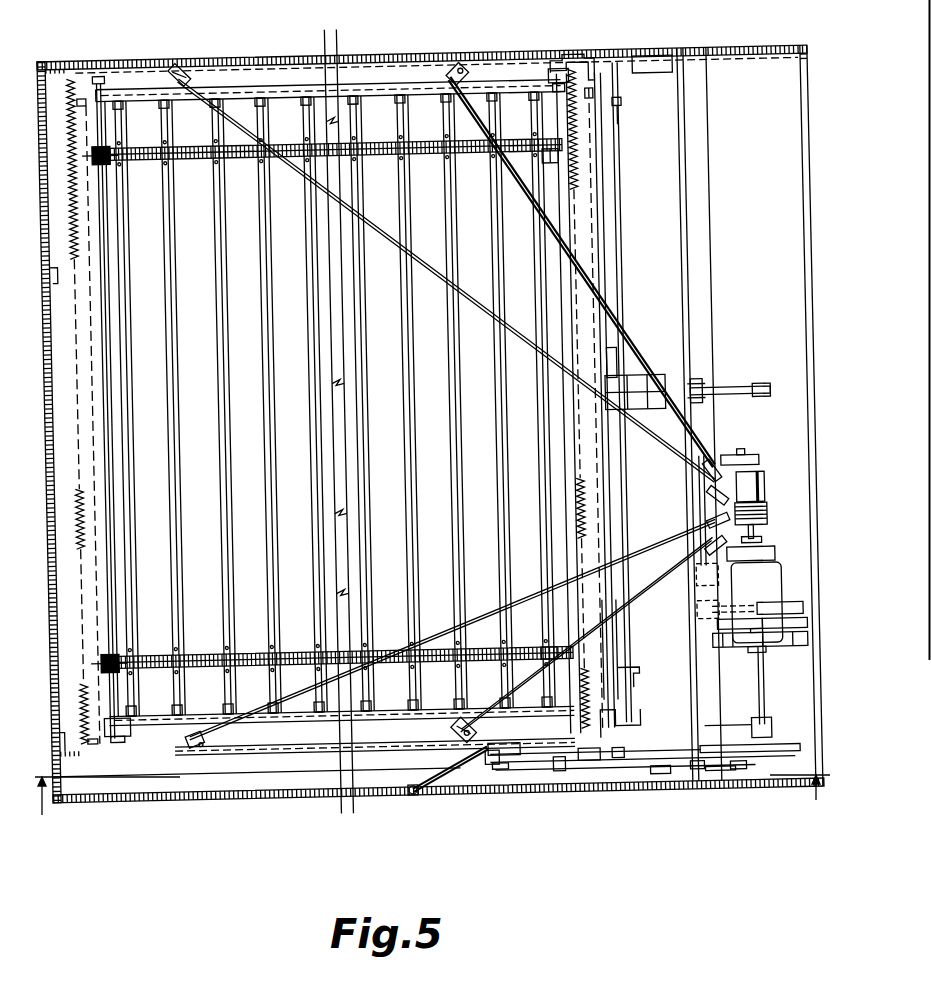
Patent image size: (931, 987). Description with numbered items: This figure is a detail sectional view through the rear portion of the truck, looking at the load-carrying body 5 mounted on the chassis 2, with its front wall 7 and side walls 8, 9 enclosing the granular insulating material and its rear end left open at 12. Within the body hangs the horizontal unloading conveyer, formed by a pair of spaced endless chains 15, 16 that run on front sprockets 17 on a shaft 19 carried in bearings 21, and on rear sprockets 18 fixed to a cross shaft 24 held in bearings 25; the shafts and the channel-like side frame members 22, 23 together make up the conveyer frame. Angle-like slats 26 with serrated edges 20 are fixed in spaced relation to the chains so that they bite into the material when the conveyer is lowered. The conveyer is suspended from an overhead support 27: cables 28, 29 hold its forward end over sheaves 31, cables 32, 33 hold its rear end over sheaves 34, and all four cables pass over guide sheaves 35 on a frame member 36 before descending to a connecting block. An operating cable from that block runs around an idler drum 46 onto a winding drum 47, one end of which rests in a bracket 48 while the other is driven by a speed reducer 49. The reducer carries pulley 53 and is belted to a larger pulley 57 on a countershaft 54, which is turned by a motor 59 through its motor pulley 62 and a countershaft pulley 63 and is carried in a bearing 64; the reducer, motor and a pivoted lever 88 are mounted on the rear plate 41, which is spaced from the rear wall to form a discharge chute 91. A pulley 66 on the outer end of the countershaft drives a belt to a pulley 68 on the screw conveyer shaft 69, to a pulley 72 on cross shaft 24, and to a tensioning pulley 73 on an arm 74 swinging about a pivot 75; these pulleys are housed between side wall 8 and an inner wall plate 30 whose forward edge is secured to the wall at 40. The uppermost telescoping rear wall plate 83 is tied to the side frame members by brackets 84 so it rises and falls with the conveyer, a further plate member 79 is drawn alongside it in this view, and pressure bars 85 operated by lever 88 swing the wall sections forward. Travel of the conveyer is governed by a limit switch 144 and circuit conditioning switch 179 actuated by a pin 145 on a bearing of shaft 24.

The chassis 2 is at (431, 812).
The load-carrying body 5 is at (211, 808).
The front wall 7 is at (46, 268).
The side wall 8 is at (258, 802).
The side wall 9 is at (224, 60).
The open rear end 12 is at (804, 118).
The endless chain 15 is at (245, 656).
The endless chain 16 is at (242, 152).
The sprockets 17 is at (110, 162).
The sprockets 18 is at (546, 153).
The shaft 19 is at (108, 380).
The serrated edges 20 is at (75, 546).
The bearings 21 is at (112, 83).
The side frame member 22 is at (153, 722).
The side frame member 23 is at (245, 90).
The cross shaft 24 is at (530, 378).
The bearings 25 is at (527, 77).
The slats 26 is at (172, 298).
The overhead support 27 is at (290, 72).
The cable 28 is at (437, 628).
The cable 29 is at (430, 275).
The inner wall plate 30 is at (478, 772).
The sheaves 31 is at (176, 72).
The cable 32 is at (640, 592).
The cable 33 is at (637, 326).
The sheaves 34 is at (446, 72).
The guide sheaves 35 is at (705, 487).
The frame member 36 is at (700, 320).
The forward edge attachment 40 is at (410, 800).
The plate 41 is at (684, 247).
The idler drum 46 is at (700, 506).
The winding drum 47 is at (757, 483).
The bracket 48 is at (757, 458).
The speed reducer 49 is at (768, 540).
The pulley 53 is at (785, 619).
The countershaft 54 is at (760, 681).
The pulley 57 is at (785, 606).
The motor 59 is at (767, 580).
The motor pulley 62 is at (745, 629).
The pulley 63 is at (780, 626).
The bearing 64 is at (765, 721).
The pulley 66 is at (780, 746).
The pulley 68 is at (690, 762).
The shaft 69 is at (660, 770).
The pulley 72 is at (585, 764).
The pulley 73 is at (730, 770).
The arm 74 is at (710, 757).
The pivot 75 is at (618, 756).
The guide plate 79 is at (612, 141).
The upper telescoping plate 83 is at (606, 656).
The brackets 84 is at (600, 68).
The pressure bars 85 is at (628, 112).
The lever 88 is at (762, 388).
The chute 91 is at (658, 251).
The upper limit switch 144 is at (500, 762).
The pin 145 is at (512, 770).
The circuit conditioning switch 179 is at (556, 766).